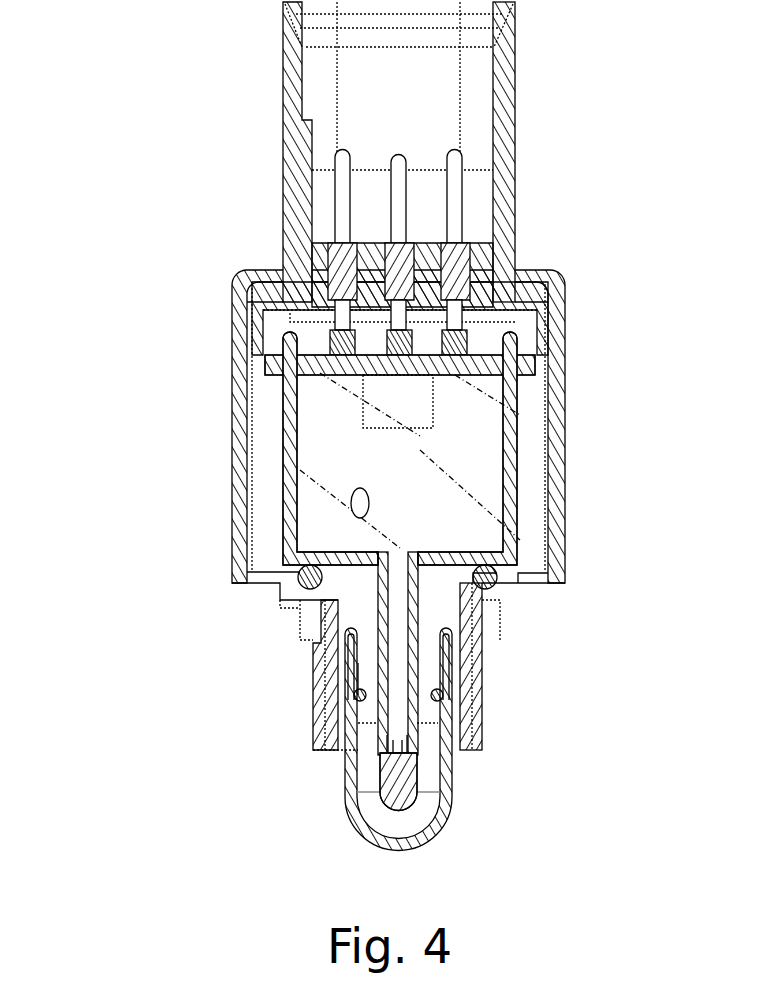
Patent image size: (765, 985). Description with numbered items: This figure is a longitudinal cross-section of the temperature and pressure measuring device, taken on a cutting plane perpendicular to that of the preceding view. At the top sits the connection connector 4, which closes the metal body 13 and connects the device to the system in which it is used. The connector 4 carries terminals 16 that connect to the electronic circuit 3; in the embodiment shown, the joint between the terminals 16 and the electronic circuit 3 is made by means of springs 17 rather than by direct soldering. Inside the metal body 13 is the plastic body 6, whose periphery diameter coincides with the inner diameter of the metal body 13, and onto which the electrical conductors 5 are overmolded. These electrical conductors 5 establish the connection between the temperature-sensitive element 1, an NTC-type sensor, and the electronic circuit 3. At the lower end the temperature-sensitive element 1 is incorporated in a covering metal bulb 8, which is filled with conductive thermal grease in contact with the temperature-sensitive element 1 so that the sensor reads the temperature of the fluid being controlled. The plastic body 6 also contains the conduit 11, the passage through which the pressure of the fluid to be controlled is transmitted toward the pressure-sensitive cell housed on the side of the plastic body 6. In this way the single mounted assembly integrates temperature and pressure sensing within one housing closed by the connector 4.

The temperature-sensitive element 1 is at (393, 795).
The electronic circuit 3 is at (268, 367).
The connection connector 4 is at (290, 103).
The electrical conductors 5 is at (410, 676).
The plastic body 6 is at (487, 447).
The covering metal bulb 8 is at (445, 800).
The conduit 11 is at (353, 500).
The metal body 13 is at (233, 565).
The terminals 16 is at (455, 215).
The springs 17 is at (457, 338).